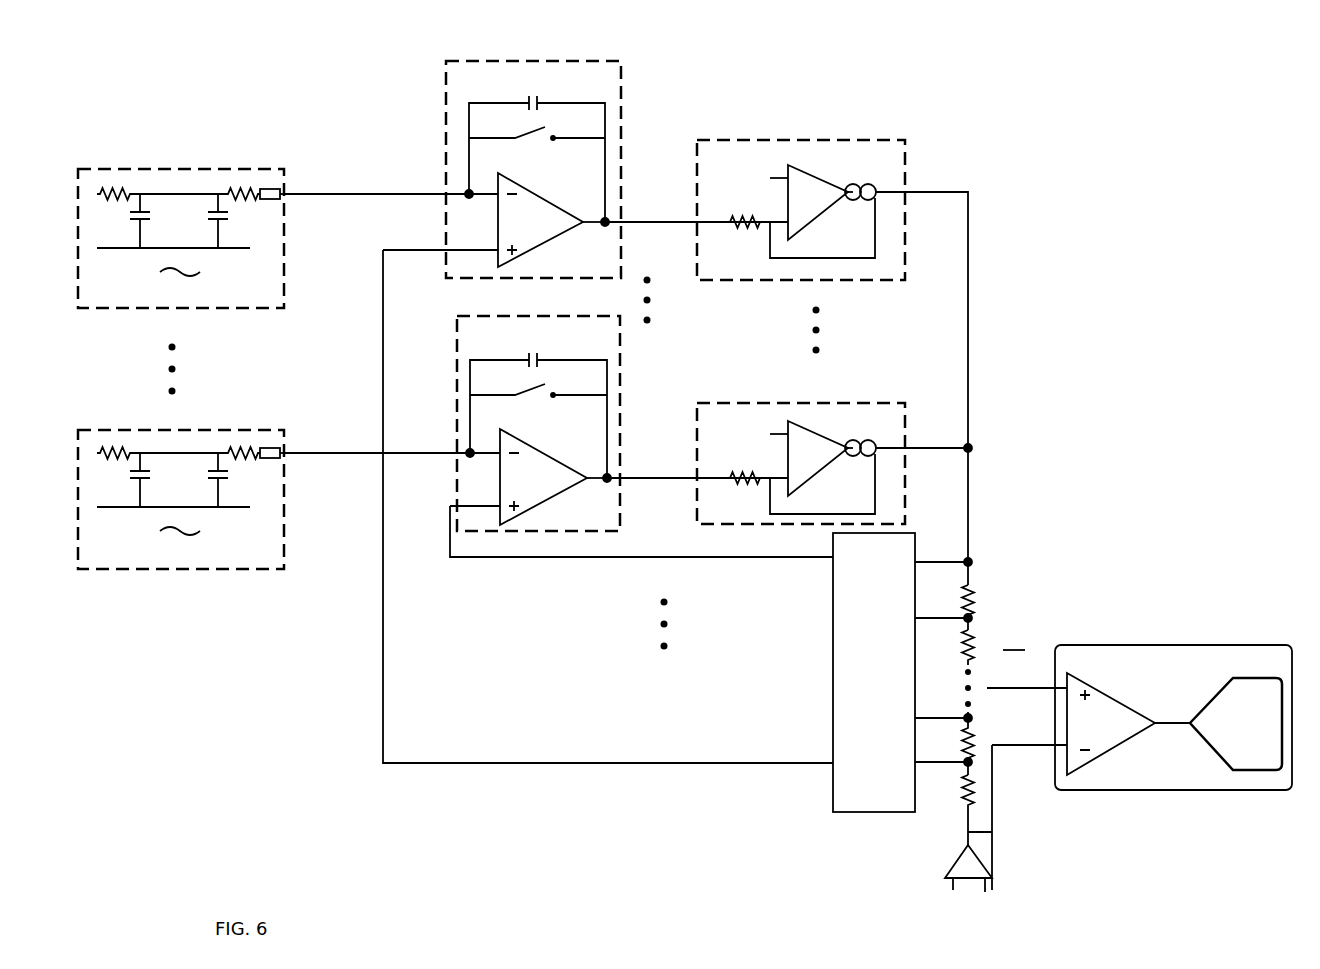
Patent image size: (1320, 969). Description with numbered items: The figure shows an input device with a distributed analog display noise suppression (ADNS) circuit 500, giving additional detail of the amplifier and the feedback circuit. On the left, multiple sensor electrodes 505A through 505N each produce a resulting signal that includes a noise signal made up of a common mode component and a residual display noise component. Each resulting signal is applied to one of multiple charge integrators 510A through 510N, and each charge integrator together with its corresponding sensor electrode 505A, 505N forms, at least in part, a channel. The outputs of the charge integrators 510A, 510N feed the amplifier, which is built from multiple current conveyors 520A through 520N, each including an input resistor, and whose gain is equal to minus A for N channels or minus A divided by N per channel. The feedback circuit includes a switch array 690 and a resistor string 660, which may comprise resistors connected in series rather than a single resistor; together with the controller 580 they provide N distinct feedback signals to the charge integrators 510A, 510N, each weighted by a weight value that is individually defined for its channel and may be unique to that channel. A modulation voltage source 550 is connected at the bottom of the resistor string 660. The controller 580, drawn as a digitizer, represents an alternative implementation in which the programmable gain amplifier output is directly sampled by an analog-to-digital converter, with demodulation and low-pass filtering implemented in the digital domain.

The distributed analog display noise suppression (ADNS) circuit 500 is at (1172, 136).
The sensor electrode 505A is at (128, 166).
The sensor electrode 505N is at (186, 426).
The charge integrator 510A is at (612, 57).
The charge integrator 510N is at (452, 414).
The current conveyor 520A is at (776, 135).
The current conveyor 520N is at (710, 401).
The modulation voltage source Vmod 550 is at (942, 877).
The controller 580 is at (1252, 642).
The resistor string 660 is at (1006, 592).
The switch array 690 is at (830, 668).